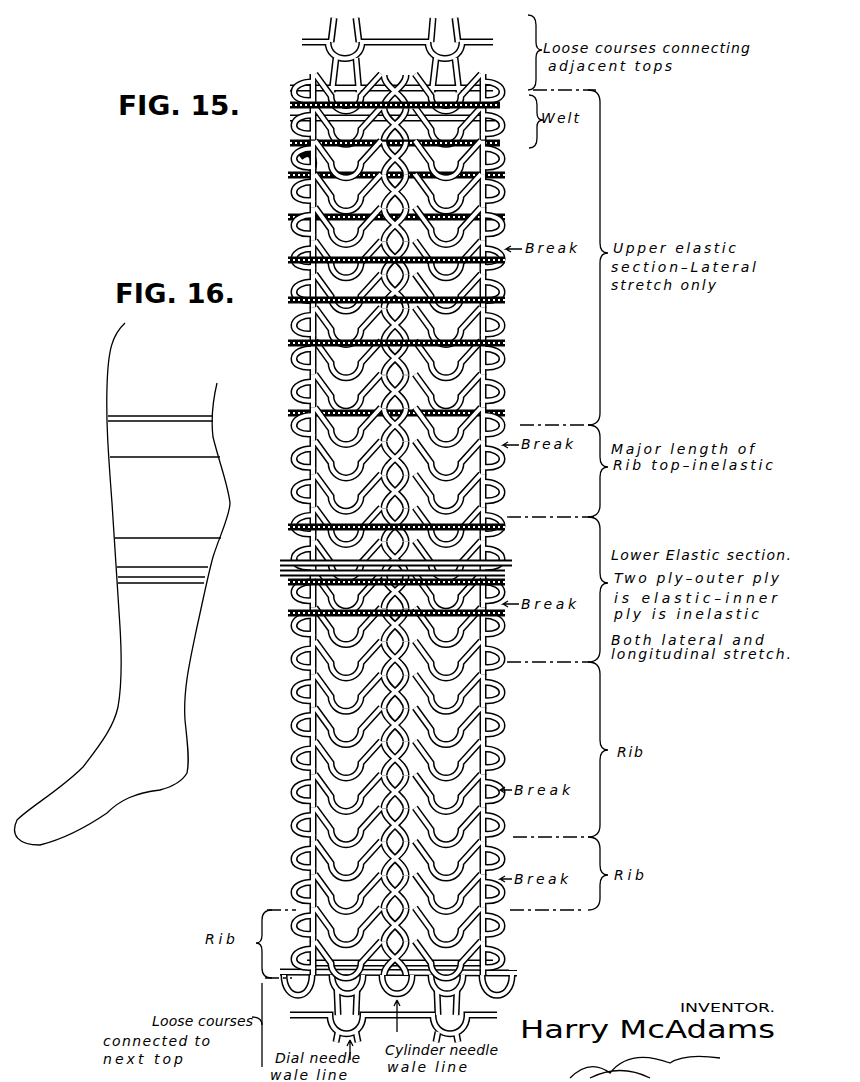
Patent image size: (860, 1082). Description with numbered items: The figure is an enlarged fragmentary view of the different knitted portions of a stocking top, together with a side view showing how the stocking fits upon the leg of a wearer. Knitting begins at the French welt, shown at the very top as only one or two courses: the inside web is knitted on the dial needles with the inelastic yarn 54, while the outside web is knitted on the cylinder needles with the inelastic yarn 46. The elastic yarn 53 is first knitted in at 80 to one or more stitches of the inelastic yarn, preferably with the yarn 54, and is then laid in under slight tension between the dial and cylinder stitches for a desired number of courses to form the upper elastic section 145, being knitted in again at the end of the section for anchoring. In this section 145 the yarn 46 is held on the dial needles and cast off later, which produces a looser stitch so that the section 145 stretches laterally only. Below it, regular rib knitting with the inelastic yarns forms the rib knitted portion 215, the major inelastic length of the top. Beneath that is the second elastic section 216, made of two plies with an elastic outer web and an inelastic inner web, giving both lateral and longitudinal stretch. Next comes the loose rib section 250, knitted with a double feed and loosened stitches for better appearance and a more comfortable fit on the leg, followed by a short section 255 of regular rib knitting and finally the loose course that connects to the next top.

The inelastic yarn 54 is at (490, 118).
The knitted-in point of elastic yarn 80 is at (307, 152).
The inelastic yarn 46 is at (497, 173).
The elastic yarn 53 is at (500, 216).
The upper elastic section 145 is at (451, 249).
The rib knitted portion 215 is at (600, 499).
The second elastic section 216 is at (598, 541).
The loose rib section 250 is at (598, 713).
The short rib section 255 is at (595, 852).